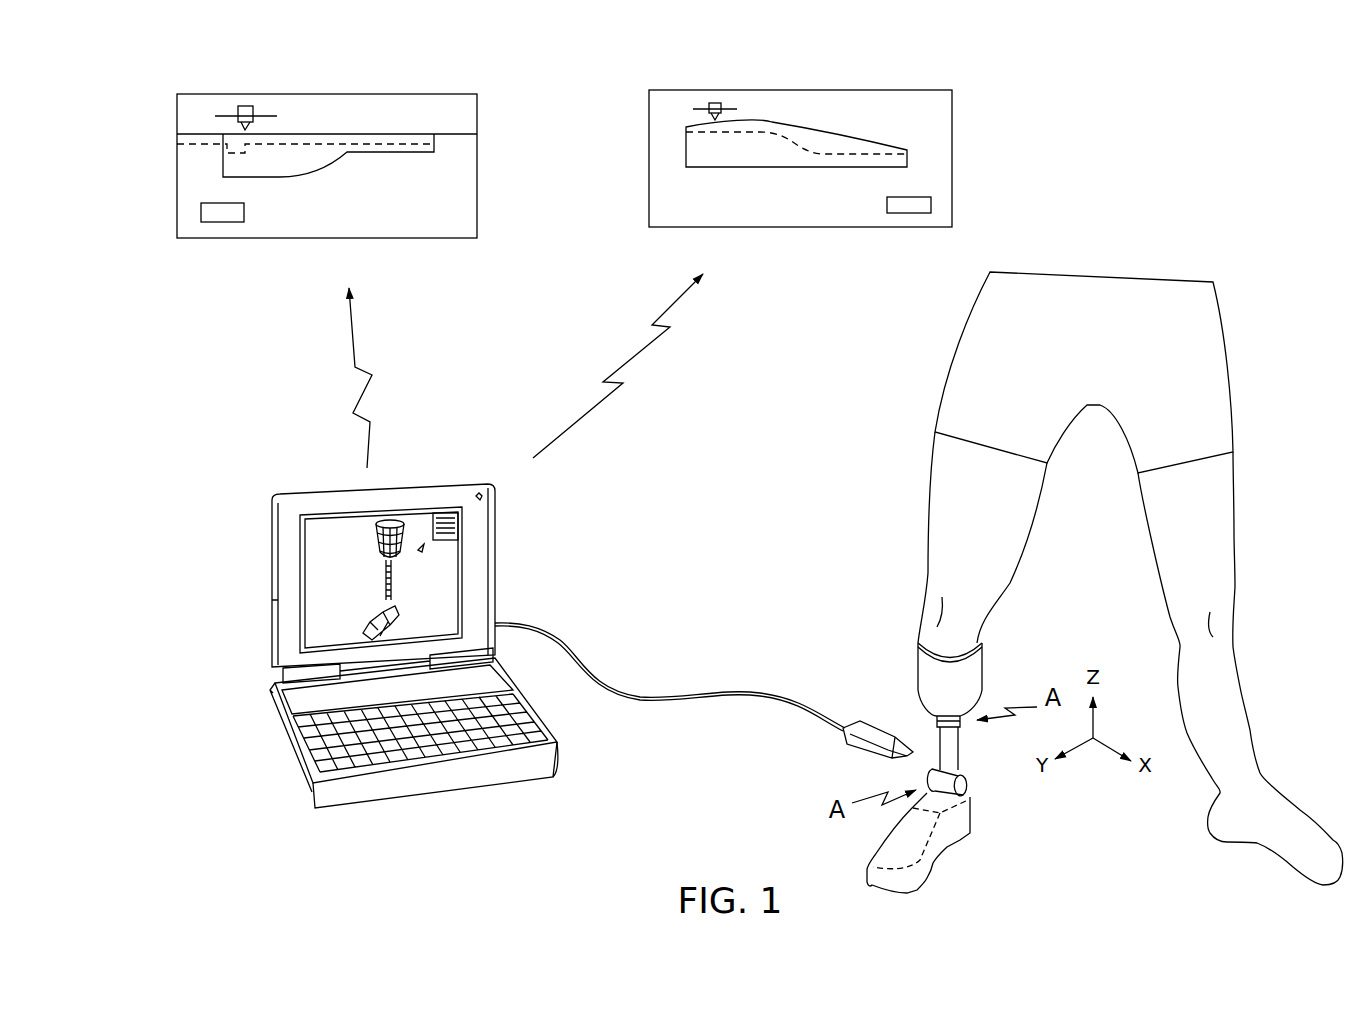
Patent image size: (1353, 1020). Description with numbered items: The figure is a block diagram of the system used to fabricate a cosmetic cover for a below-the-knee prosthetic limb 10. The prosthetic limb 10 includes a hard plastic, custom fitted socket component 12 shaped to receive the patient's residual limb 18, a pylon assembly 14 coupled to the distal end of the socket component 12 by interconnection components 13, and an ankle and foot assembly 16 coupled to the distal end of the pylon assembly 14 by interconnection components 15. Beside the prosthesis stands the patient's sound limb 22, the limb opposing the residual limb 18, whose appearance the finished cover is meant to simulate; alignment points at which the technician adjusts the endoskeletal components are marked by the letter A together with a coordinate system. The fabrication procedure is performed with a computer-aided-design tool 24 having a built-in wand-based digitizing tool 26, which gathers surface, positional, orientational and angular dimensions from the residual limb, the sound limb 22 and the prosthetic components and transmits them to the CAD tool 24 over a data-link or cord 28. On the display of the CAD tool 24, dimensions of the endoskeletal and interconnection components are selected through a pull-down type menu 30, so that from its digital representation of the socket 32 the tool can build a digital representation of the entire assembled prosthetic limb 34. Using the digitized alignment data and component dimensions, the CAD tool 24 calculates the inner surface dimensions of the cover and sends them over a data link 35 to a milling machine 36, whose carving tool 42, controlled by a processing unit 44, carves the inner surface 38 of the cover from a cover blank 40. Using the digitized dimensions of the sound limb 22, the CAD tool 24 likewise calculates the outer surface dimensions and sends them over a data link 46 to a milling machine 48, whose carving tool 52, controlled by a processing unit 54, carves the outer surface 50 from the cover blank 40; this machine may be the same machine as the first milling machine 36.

The below-the-knee prosthetic limb 10 is at (905, 787).
The socket component 12 is at (977, 672).
The interconnection components 13 is at (937, 722).
The pylon assembly 14 is at (958, 752).
The interconnection components 15 is at (966, 783).
The ankle and foot assembly 16 is at (918, 878).
The residual limb 18 is at (930, 510).
The sound limb 22 is at (1233, 530).
The computer-aided-design tool 24 is at (364, 615).
The digitizing tool 26 is at (846, 706).
The data-link or cord 28 is at (690, 692).
The pull-down type menu 30 is at (450, 570).
The digital representation of the socket 32 is at (388, 525).
The digital representation of the entire assembled prosthetic limb 34 is at (408, 516).
The data link 35 is at (363, 343).
The milling machine 36 is at (468, 202).
The inner surface 38 is at (222, 143).
The cover blank 40 is at (313, 163).
The carving tool 42 is at (244, 102).
The processing unit 44 is at (218, 220).
The data link 46 is at (630, 362).
The milling machine 48 is at (655, 165).
The outer surface 50 is at (806, 136).
The carving tool 52 is at (713, 100).
The processing unit 54 is at (903, 210).